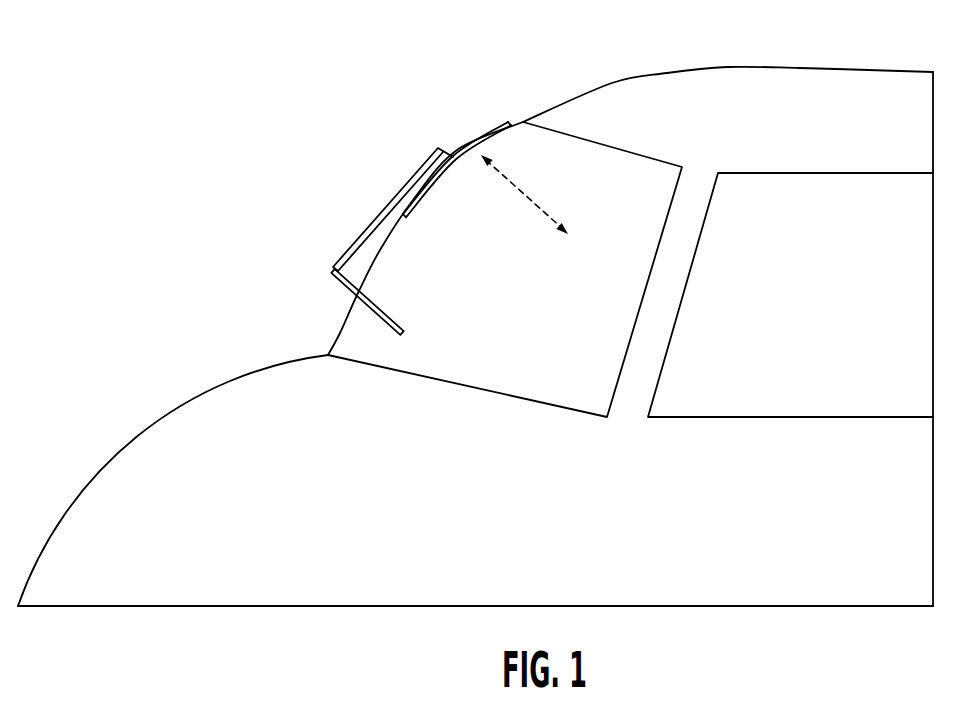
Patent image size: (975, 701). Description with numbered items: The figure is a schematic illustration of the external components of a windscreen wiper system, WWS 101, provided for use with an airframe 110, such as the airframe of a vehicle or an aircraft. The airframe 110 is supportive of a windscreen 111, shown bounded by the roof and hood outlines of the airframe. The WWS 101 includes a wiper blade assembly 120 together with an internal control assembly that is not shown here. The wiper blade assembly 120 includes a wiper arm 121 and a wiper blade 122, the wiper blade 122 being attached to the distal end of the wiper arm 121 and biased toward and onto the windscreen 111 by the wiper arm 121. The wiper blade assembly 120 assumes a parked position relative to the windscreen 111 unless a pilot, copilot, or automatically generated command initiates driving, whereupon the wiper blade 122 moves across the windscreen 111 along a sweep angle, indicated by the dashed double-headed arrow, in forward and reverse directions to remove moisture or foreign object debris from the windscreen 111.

The WWS 101 is at (333, 135).
The airframe 110 is at (612, 83).
The windscreen 111 is at (347, 347).
The wiper blade assembly 120 is at (330, 272).
The wiper arm 121 is at (408, 182).
The wiper blade 122 is at (481, 139).